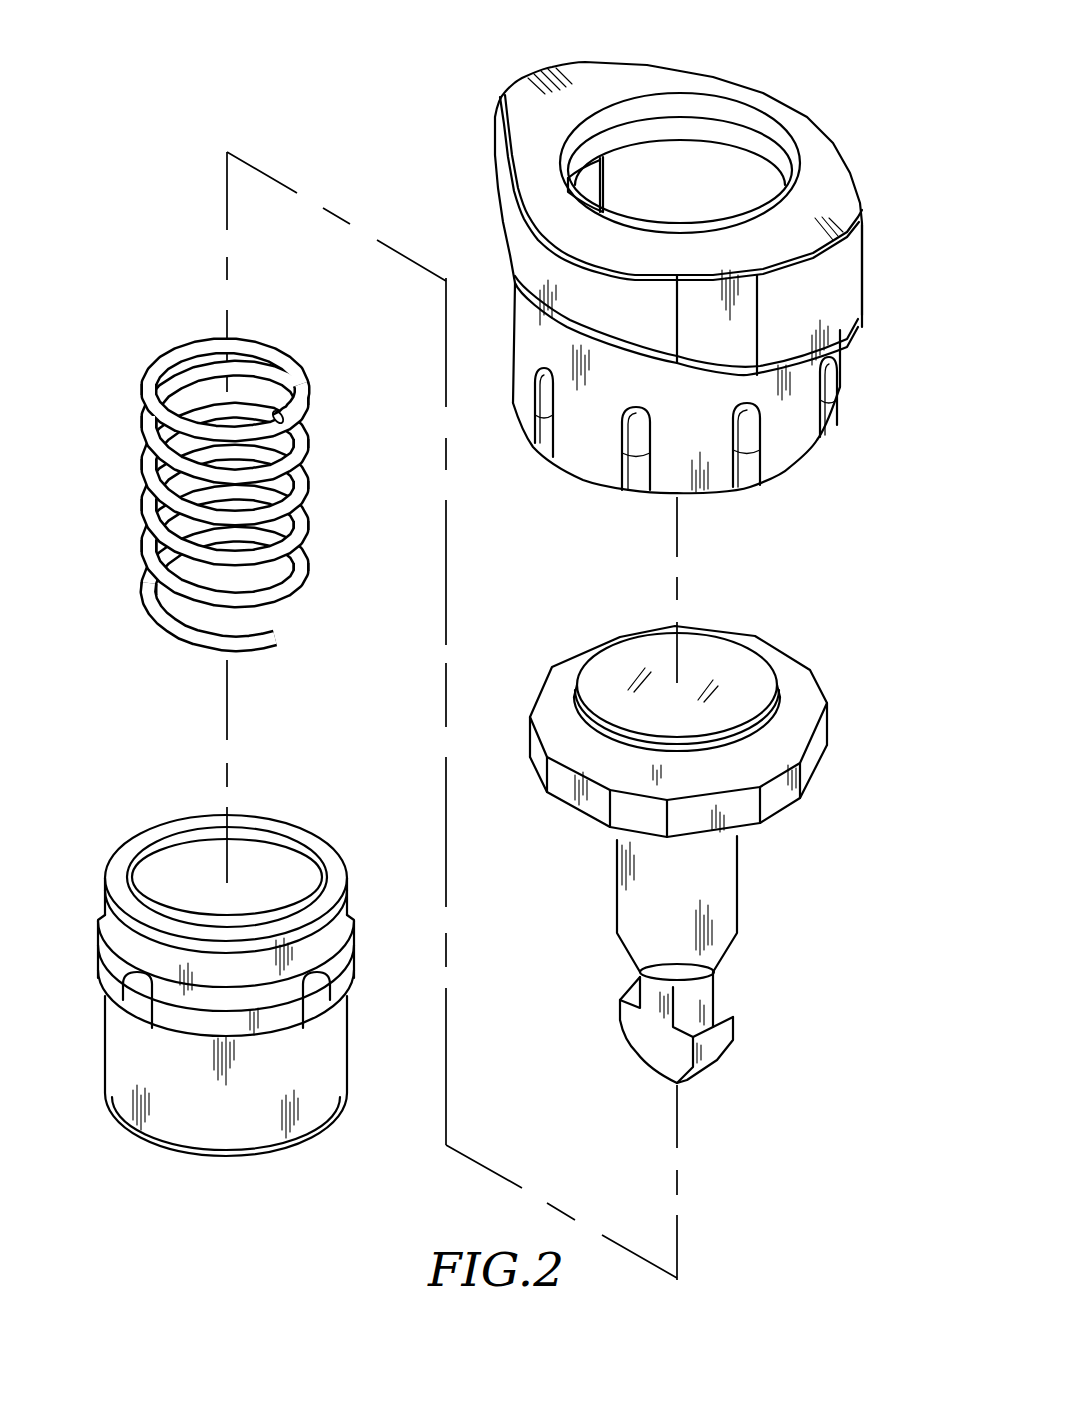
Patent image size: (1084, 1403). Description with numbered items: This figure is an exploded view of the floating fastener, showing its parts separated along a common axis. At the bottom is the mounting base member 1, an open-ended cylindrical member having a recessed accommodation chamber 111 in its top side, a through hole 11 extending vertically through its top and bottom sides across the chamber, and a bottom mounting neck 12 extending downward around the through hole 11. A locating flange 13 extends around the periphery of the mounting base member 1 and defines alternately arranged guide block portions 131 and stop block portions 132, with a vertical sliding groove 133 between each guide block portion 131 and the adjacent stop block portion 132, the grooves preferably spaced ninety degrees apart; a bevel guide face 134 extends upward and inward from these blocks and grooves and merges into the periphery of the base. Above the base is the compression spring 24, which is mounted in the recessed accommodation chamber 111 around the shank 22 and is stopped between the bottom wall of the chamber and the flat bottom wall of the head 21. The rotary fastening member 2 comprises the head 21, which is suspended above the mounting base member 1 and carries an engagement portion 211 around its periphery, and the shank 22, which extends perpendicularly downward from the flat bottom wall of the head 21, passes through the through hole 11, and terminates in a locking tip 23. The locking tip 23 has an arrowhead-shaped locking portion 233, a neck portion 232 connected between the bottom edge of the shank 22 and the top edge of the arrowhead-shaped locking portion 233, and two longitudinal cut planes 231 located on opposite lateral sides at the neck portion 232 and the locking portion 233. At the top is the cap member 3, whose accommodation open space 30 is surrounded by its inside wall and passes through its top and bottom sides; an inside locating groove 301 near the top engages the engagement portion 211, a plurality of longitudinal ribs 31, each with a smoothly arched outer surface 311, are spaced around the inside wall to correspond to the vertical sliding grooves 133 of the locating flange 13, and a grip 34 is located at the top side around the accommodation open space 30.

The mounting base member 1 is at (259, 994).
The through hole 11 is at (180, 865).
The recessed accommodation chamber 111 is at (265, 858).
The bottom mounting neck 12 is at (233, 1155).
The locating flange 13 is at (259, 959).
The guide block portion 131 is at (338, 984).
The stop block portion 132 is at (283, 1015).
The vertical sliding groove 133 is at (317, 997).
The bevel guide face 134 is at (335, 960).
The rotary fastening member 2 is at (670, 854).
The head 21 is at (745, 654).
The engagement portion 211 is at (798, 677).
The shank 22 is at (727, 893).
The locking tip 23 is at (662, 1023).
The longitudinal cut plane 231 is at (647, 1040).
The neck portion 232 is at (702, 998).
The arrowhead-shaped locking portion 233 is at (717, 1042).
The compression spring 24 is at (293, 523).
The cap member 3 is at (673, 262).
The accommodation open space 30 is at (680, 132).
The inside locating groove 301 is at (708, 137).
The longitudinal rib 31 is at (517, 193).
The smoothly arched outer surface 311 is at (560, 187).
The grip 34 is at (850, 288).